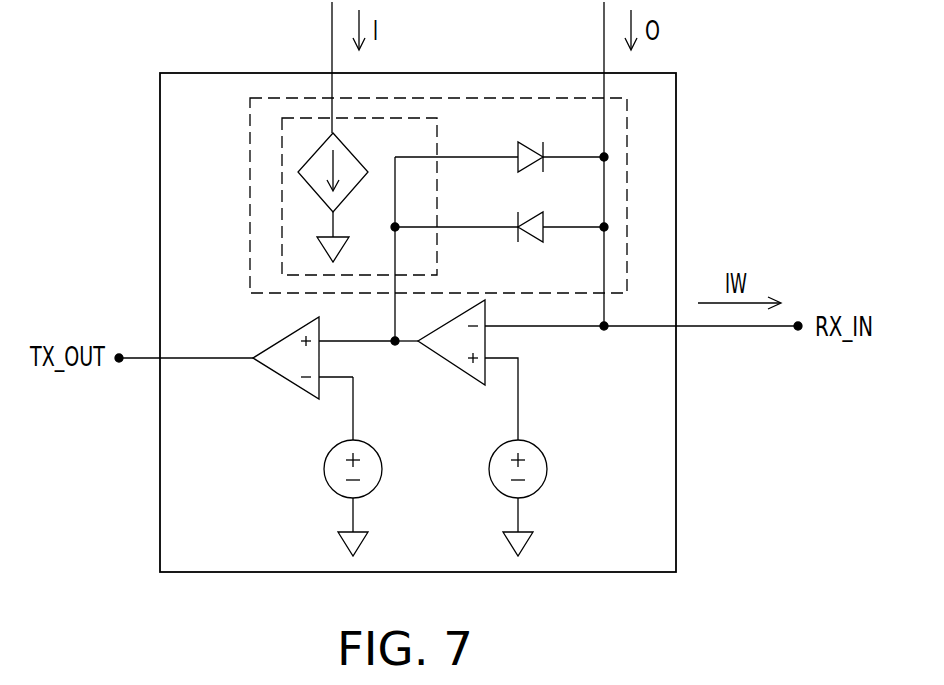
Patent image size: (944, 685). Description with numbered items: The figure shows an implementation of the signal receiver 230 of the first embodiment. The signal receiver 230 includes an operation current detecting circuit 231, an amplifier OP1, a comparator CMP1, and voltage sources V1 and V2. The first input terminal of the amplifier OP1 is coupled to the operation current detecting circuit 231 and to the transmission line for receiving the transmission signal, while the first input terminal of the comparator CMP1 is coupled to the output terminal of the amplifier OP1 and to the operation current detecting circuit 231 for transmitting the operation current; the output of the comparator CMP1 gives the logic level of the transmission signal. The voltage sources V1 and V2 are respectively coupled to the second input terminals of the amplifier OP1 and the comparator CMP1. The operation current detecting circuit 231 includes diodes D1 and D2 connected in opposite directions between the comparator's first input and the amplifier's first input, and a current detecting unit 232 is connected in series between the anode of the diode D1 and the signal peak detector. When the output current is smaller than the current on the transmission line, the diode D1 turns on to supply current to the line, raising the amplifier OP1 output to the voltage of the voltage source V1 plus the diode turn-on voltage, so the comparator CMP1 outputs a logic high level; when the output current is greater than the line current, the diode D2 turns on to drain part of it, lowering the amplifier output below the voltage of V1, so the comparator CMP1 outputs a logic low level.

The signal receiver 230 is at (739, 607).
The operation current detecting circuit 231 is at (250, 163).
The current detecting unit 232 is at (443, 248).
The diode D1 is at (533, 147).
The diode D2 is at (527, 213).
The amplifier OP1 is at (450, 362).
The comparator CMP1 is at (283, 380).
The voltage source V1 is at (536, 498).
The voltage source V2 is at (371, 466).